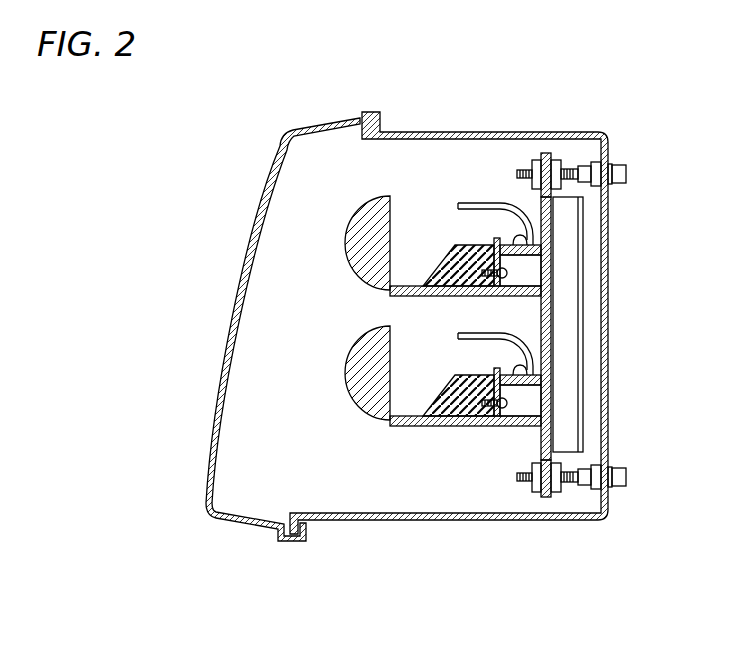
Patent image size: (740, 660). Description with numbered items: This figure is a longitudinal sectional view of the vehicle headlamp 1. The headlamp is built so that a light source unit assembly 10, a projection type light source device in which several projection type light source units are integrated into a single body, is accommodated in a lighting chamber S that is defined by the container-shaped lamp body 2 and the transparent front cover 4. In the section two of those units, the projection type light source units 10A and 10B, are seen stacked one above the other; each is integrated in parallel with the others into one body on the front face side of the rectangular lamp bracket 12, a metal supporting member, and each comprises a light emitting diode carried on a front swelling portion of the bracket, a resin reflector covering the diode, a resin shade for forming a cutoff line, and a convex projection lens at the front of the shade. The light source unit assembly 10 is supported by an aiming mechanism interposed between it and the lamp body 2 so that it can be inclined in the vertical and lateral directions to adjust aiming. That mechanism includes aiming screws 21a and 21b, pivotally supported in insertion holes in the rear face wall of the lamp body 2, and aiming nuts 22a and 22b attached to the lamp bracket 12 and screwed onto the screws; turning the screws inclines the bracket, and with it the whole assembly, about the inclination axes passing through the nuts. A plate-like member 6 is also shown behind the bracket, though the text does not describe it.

The vehicle headlamp 1 is at (255, 126).
The lamp body 2 is at (609, 373).
The transparent front cover 4 is at (268, 183).
The circuit board 6 is at (572, 228).
The light source unit assembly 10 is at (444, 165).
The projection type light source unit 10A is at (350, 405).
The projection type light source unit 10B is at (343, 254).
The lamp bracket 12 is at (551, 350).
The aiming screw 21a is at (570, 485).
The aiming screw 21b is at (567, 167).
The aiming nut 22a is at (542, 497).
The aiming nut 22b is at (536, 153).
The lighting chamber S is at (260, 318).